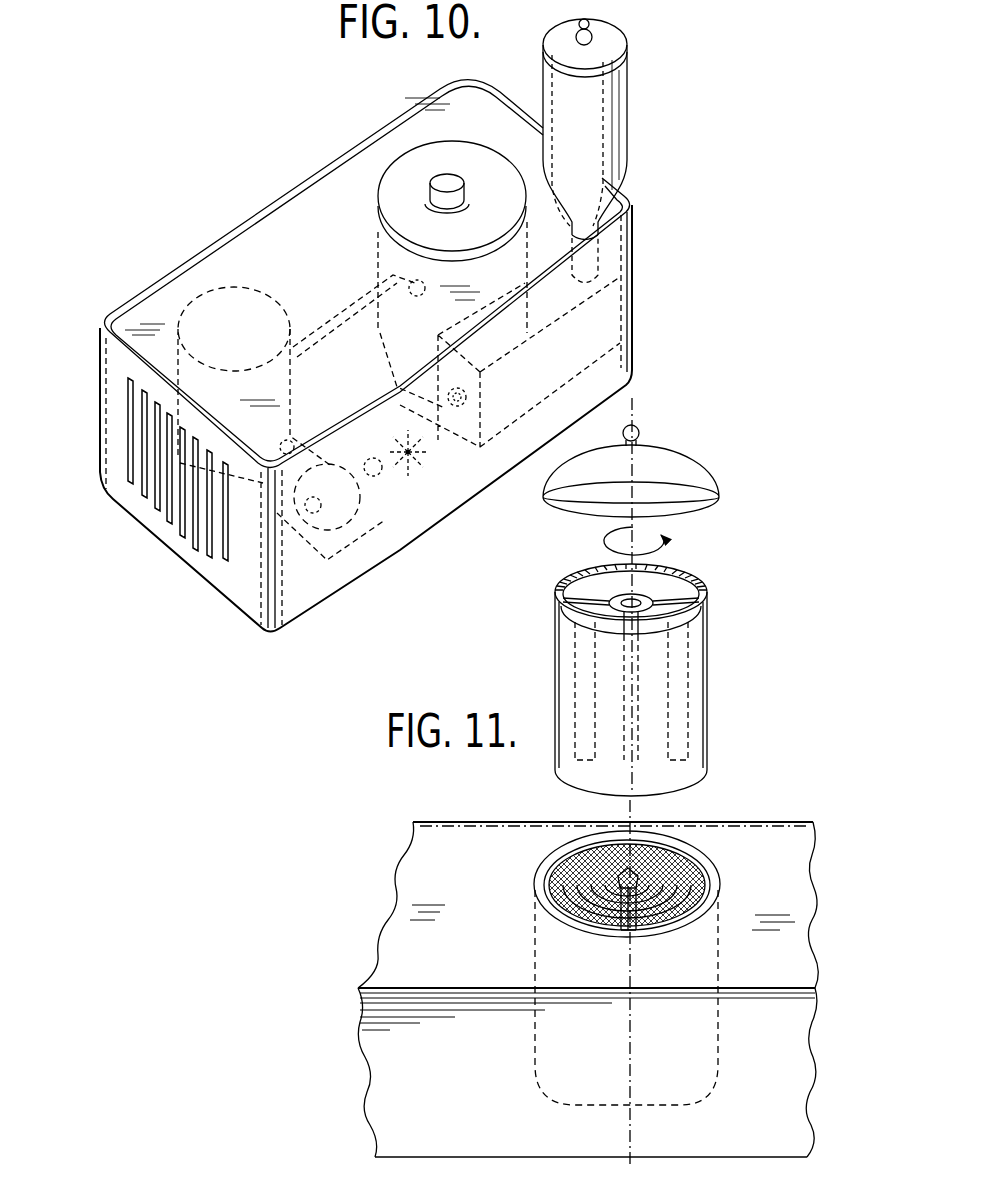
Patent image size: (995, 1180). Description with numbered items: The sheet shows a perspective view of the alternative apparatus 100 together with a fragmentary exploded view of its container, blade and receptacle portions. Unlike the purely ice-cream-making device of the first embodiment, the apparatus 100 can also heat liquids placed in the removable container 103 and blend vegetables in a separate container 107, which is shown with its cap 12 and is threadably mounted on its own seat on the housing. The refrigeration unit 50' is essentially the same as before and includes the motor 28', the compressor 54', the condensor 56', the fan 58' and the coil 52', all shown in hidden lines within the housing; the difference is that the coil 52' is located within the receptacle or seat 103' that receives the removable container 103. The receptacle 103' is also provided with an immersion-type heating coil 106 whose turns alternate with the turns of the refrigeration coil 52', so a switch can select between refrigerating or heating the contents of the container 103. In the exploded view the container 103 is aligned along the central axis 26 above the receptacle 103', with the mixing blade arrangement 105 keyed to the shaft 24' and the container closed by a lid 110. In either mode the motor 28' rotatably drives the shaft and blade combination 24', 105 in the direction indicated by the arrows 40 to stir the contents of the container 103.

In FIG. 10, the apparatus 100 is at (128, 133).
In FIG. 11, the apparatus 100 is at (368, 1048).
In FIG. 10, the lid 110 is at (432, 157).
In FIG. 10, the bottle cap 12 is at (613, 38).
In FIG. 10, the container 107 is at (612, 119).
In FIG. 10, the receptacle 103' is at (409, 261).
In FIG. 11, the receptacle 103' is at (656, 941).
In FIG. 10, the condensor 56' is at (254, 351).
In FIG. 10, the refrigeration unit 50' is at (308, 271).
In FIG. 10, the coil 52' is at (359, 308).
In FIG. 11, the coil 52' is at (586, 885).
In FIG. 10, the container 103 is at (535, 564).
In FIG. 10, the motor 28' is at (552, 362).
In FIG. 10, the central axis 26 is at (638, 414).
In FIG. 11, the central axis 26 is at (634, 813).
In FIG. 10, the arrows 40 is at (602, 547).
In FIG. 10, the mixing blade arrangement 105 is at (680, 612).
In FIG. 10, the fan 58' is at (430, 463).
In FIG. 10, the compressor 54' is at (336, 526).
In FIG. 11, the shaft 24' is at (657, 884).
In FIG. 11, the heating coil 106 is at (557, 898).